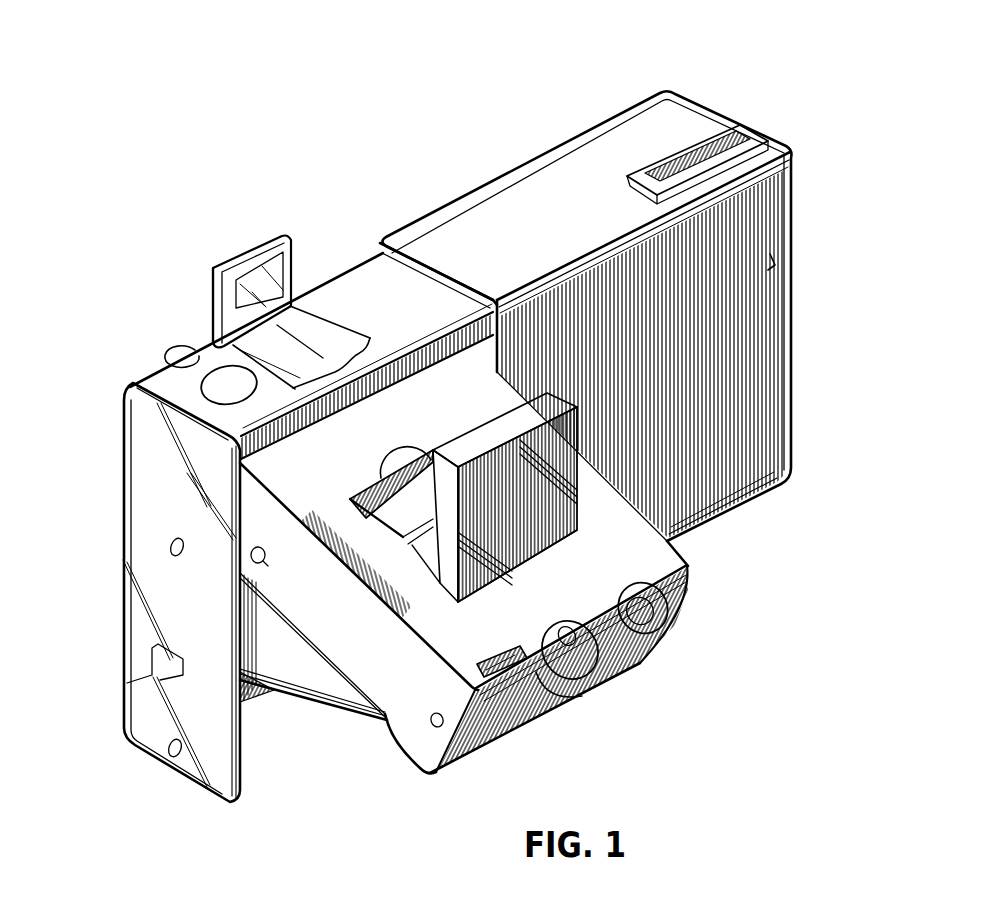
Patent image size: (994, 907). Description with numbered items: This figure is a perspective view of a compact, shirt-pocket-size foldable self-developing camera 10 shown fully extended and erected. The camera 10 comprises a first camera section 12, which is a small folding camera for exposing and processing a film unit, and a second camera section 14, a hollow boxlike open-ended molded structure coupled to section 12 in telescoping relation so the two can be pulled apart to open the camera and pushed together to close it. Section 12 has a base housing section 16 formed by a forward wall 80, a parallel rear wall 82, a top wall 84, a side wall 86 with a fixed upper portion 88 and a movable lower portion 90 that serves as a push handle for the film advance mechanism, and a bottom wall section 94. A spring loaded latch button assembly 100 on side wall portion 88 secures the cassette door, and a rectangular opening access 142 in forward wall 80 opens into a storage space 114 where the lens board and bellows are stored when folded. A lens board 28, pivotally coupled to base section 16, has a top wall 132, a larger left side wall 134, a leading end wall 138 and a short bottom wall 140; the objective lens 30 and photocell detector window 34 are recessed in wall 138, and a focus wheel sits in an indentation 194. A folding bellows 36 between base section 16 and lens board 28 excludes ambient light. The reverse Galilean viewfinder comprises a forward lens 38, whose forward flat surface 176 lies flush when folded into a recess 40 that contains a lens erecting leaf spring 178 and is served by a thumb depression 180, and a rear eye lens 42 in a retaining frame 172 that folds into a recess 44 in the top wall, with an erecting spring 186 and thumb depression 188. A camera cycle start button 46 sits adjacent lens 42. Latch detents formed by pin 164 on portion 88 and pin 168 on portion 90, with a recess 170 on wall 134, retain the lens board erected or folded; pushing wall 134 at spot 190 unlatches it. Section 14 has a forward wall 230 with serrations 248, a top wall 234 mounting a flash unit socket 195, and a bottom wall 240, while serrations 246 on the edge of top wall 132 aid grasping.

The camera 10 is at (493, 126).
The first camera section 12 is at (272, 738).
The second camera section 14 is at (735, 535).
The base housing section 16 is at (146, 360).
The lens board 28 is at (434, 782).
The objective lens 30 is at (588, 672).
The photocell detector window 34 is at (657, 620).
The folding bellows 36 is at (342, 700).
The forward objective lens of viewfinder 38 is at (496, 430).
The recess 40 is at (381, 486).
The rear eye lens of viewfinder 42 is at (255, 284).
The recess 44 is at (331, 338).
The camera cycle start button 46 is at (213, 379).
The forward wall 80 is at (480, 327).
The rear wall 82 is at (333, 267).
The top wall 84 is at (377, 243).
The side wall 86 is at (120, 598).
The fixed upper portion of side wall 88 is at (150, 490).
The movable lower portion of side wall 90 is at (130, 738).
The bottom wall section 94 is at (266, 692).
The latch button assembly 100 is at (182, 351).
The storage space 114 is at (246, 708).
The top wall of lens board 132 is at (640, 553).
The left side wall of lens board 134 is at (313, 625).
The leading end wall 138 is at (490, 728).
The bottom wall of lens board 140 is at (421, 772).
The opening access 142 is at (248, 469).
The pin 164 is at (177, 561).
The pin 168 is at (181, 745).
The recess 170 is at (437, 714).
The retaining frame 172 is at (215, 301).
The forward flat surface 176 is at (511, 572).
The lens erecting leaf spring 178 is at (427, 545).
The thumb depression 180 is at (409, 457).
The erecting spring 186 is at (284, 338).
The thumb depression 188 is at (351, 357).
The push spot 190 is at (282, 566).
The indentation 194 is at (526, 648).
The flash unit socket 195 is at (719, 130).
The forward wall 230 is at (774, 186).
The top wall 234 is at (606, 140).
The bottom wall 240 is at (756, 505).
The serrations 246 is at (336, 520).
The serrations 248 is at (776, 270).